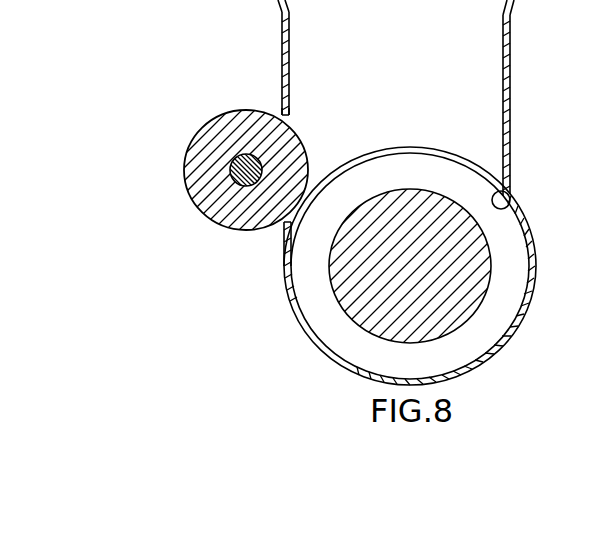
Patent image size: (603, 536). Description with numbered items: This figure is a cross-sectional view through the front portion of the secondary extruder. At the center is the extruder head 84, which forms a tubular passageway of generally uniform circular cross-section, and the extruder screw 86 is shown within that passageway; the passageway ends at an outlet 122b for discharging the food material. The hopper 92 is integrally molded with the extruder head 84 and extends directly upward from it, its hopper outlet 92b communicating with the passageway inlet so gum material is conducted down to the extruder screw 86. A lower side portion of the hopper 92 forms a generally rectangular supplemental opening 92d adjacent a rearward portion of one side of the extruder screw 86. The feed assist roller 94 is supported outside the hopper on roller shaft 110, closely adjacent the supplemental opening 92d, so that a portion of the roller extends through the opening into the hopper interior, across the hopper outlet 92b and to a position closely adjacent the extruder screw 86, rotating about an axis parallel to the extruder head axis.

The extruder head 84 is at (300, 324).
The extruder screw 86 is at (337, 275).
The hopper 92 is at (282, 17).
The supplemental opening 92d is at (289, 117).
The hopper outlet 92b is at (503, 163).
The outlet 122b is at (510, 208).
The feed assist roller 94 is at (208, 133).
The roller shaft 110 is at (213, 183).